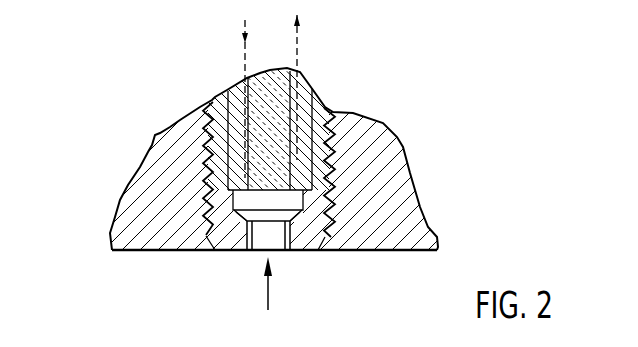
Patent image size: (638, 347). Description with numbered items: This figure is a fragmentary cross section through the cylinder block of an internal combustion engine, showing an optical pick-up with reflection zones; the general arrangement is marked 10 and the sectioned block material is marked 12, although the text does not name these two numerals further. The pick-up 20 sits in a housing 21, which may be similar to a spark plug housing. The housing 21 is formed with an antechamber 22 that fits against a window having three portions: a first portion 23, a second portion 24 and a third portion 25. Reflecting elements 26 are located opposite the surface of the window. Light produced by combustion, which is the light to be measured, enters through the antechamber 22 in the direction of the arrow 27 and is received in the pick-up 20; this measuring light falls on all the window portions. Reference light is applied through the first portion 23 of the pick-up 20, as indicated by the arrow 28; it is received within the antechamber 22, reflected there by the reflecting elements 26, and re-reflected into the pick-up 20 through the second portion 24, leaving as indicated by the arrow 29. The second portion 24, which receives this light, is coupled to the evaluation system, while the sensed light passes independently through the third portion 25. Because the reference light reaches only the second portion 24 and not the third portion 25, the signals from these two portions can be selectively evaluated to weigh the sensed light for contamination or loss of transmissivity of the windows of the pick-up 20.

The valve assembly 10 is at (180, 289).
The housing body 12 is at (153, 214).
The pick-up 20 is at (336, 96).
The housing 21 is at (276, 213).
The antechamber 22 is at (283, 251).
The first portion 23 is at (240, 134).
The second portion 24 is at (305, 157).
The third portion 25 is at (280, 139).
The reflecting elements 26 is at (293, 221).
The arrow 27 is at (267, 296).
The arrow 28 is at (243, 30).
The arrow 29 is at (300, 28).